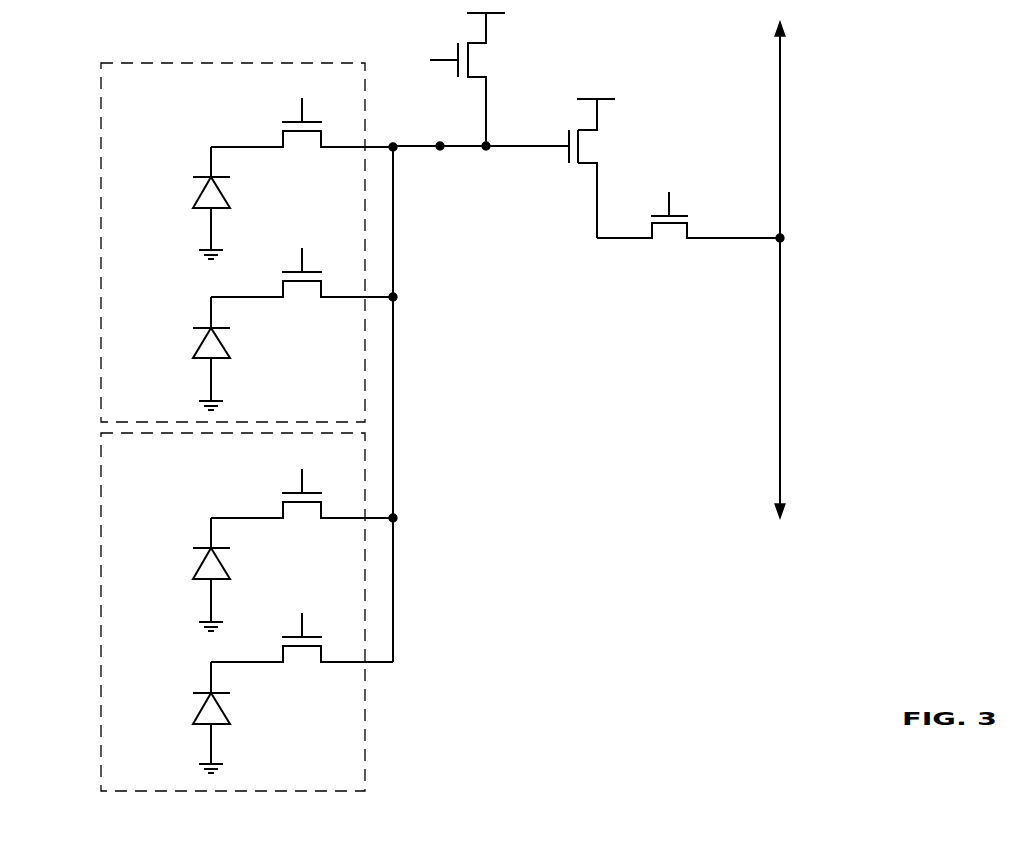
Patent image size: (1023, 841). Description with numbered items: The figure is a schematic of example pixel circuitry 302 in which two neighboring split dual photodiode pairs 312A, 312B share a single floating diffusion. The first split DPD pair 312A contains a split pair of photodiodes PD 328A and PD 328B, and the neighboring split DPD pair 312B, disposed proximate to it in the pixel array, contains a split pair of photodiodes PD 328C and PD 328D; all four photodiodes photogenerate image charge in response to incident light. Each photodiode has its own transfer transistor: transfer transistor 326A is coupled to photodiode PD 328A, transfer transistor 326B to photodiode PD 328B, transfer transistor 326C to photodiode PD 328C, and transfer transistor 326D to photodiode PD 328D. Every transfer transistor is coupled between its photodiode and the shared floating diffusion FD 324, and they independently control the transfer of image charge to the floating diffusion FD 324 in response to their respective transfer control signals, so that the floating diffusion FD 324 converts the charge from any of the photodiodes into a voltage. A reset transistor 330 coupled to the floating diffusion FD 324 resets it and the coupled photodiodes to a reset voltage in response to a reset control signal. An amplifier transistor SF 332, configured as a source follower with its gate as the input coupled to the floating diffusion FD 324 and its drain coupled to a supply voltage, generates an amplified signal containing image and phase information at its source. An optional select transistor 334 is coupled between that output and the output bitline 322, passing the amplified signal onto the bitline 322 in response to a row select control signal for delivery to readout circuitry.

The pixel circuit 302 is at (907, 30).
The split DPD pair 312A is at (100, 93).
The split DPD pair 312B is at (100, 482).
The output bitline 322 is at (803, 375).
The floating diffusion region 324 is at (447, 153).
The transfer transistor 326A is at (290, 112).
The transfer transistor 326B is at (290, 265).
The transfer transistor 326C is at (290, 484).
The transfer transistor 326D is at (290, 630).
The photodiode 328A is at (182, 180).
The photodiode 328B is at (180, 327).
The photodiode 328C is at (180, 547).
The photodiode 328D is at (180, 693).
The reset transistor 330 is at (445, 43).
The amplifier transistor 332 is at (608, 128).
The select transistor 334 is at (680, 205).